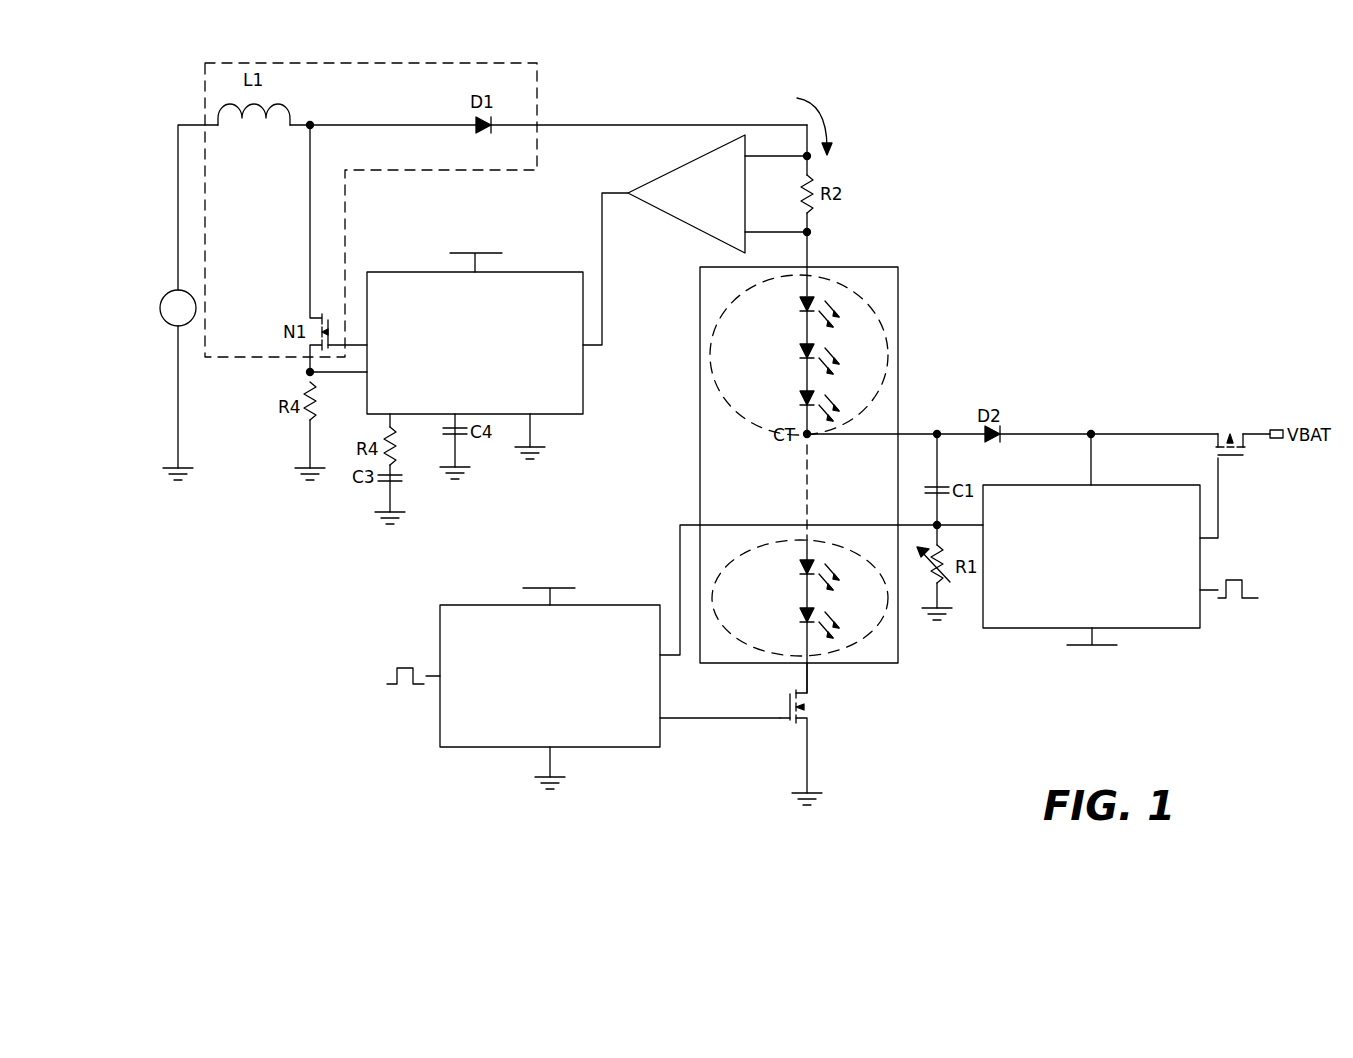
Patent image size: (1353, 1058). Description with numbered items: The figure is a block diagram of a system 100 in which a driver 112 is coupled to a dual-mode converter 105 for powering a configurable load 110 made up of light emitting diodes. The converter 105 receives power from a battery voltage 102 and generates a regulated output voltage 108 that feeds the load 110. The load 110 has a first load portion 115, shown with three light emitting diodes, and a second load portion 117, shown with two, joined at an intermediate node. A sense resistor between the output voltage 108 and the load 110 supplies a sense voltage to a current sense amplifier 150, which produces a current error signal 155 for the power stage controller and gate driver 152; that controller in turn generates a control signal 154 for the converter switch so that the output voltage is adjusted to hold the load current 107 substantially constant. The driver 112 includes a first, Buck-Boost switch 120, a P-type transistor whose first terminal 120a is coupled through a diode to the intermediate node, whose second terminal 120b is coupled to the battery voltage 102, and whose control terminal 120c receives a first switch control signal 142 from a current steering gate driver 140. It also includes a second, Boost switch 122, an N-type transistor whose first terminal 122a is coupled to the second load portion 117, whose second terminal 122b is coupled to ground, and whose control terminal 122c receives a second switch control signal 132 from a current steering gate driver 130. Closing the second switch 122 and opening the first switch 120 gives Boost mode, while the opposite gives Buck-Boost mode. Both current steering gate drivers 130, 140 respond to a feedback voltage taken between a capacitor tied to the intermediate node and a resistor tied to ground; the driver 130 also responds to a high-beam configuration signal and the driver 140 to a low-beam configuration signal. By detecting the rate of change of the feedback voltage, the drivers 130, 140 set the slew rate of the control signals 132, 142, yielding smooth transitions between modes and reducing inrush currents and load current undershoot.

The system 100 is at (1022, 103).
The battery voltage VBAT 102 is at (188, 122).
The dual-mode converter 105 is at (225, 358).
The load current iLED 107 is at (856, 126).
The output voltage VOUT 108 is at (685, 122).
The configurable load 110 is at (898, 332).
The driver 112 is at (262, 648).
The first load portion 115 is at (870, 312).
The second load portion 117 is at (752, 543).
The first switch 120 is at (1210, 438).
The first terminal of first switch 120a is at (1218, 434).
The second terminal of first switch 120b is at (1258, 438).
The control terminal of first switch 120c is at (1217, 455).
The second switch 122 is at (835, 734).
The first terminal of second switch 122a is at (807, 680).
The second terminal of second switch 122b is at (808, 733).
The control terminal of second switch 122c is at (765, 727).
The current steering gate driver 130 is at (616, 605).
The second switch control signal 132 is at (700, 727).
The current steering gate driver 140 is at (1160, 630).
The first switch control signal 142 is at (1210, 540).
The current sense amplifier 150 is at (692, 157).
The power stage controller and gate driver 152 is at (535, 272).
The control signal 154 is at (356, 355).
The current error signal 155 is at (603, 227).